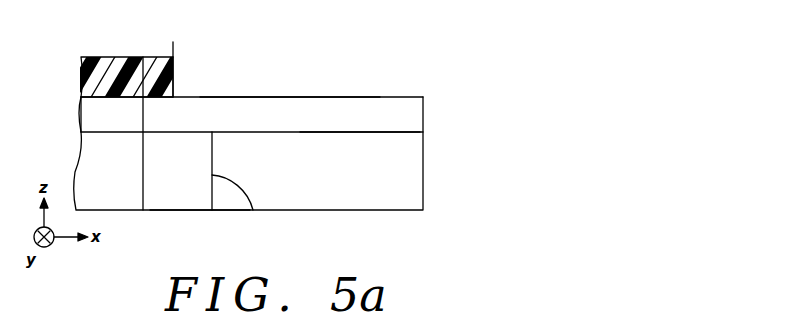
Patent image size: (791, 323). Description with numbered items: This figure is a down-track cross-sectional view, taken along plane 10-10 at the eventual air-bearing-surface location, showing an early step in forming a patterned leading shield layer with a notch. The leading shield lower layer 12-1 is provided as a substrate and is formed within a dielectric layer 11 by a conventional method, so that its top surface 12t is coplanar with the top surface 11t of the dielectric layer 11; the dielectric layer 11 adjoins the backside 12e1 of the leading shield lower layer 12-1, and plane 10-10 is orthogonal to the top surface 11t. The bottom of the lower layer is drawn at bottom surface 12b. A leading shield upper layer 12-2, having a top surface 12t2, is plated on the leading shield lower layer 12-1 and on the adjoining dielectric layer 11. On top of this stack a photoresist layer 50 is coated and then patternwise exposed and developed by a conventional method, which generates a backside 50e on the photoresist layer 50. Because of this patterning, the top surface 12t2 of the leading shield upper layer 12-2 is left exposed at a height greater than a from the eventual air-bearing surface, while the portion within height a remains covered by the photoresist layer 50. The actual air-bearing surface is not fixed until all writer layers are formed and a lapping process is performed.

The plane 10 is at (143, 56).
The dielectric layer 11 is at (410, 182).
The top surface of dielectric layer 11t is at (358, 131).
The leading shield lower layer 12-1 is at (163, 158).
The leading shield upper layer 12-2 is at (410, 117).
The top surface of leading shield lower layer 12t is at (88, 131).
The top surface of leading shield upper layer 12t2 is at (290, 97).
The bottom surface 12b is at (192, 212).
The backside of leading shield lower layer 12e1 is at (252, 212).
The photoresist layer 50 is at (93, 73).
The backside of photoresist layer 50e is at (173, 76).
The height a is at (173, 48).